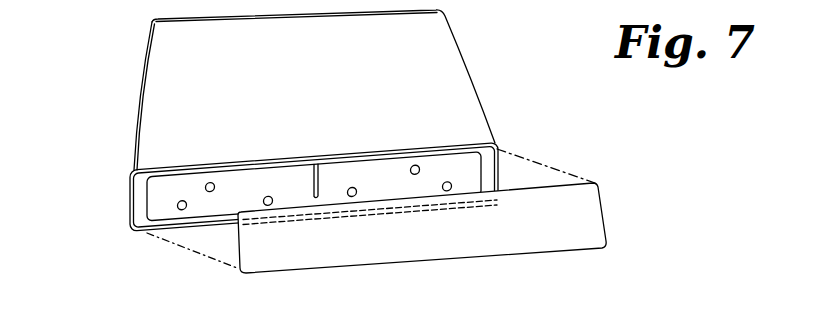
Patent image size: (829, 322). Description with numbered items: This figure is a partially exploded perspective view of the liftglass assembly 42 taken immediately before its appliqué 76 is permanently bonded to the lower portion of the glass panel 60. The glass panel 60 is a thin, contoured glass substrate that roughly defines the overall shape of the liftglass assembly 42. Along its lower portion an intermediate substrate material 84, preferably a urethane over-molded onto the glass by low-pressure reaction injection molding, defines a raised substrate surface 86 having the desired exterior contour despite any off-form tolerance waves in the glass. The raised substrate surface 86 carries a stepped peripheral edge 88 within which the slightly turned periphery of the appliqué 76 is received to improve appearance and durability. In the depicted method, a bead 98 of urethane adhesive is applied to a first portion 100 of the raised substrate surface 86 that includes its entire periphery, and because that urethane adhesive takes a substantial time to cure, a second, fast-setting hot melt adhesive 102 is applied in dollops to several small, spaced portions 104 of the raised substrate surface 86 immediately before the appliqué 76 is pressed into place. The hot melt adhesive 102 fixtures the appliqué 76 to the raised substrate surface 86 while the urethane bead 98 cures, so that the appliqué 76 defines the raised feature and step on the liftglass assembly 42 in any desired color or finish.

The liftglass assembly 42 is at (484, 61).
The glass panel 60 is at (143, 65).
The appliqué 76 is at (525, 238).
The intermediate substrate material 84 is at (130, 196).
The raised substrate surface 86 is at (163, 212).
The stepped peripheral edge 88 is at (432, 148).
The bead of urethane adhesive 98 is at (488, 162).
The first portion of the raised substrate surface 100 is at (493, 187).
The hot melt adhesive 102 is at (206, 182).
The spaced portions of the raised substrate surface 104 is at (200, 207).